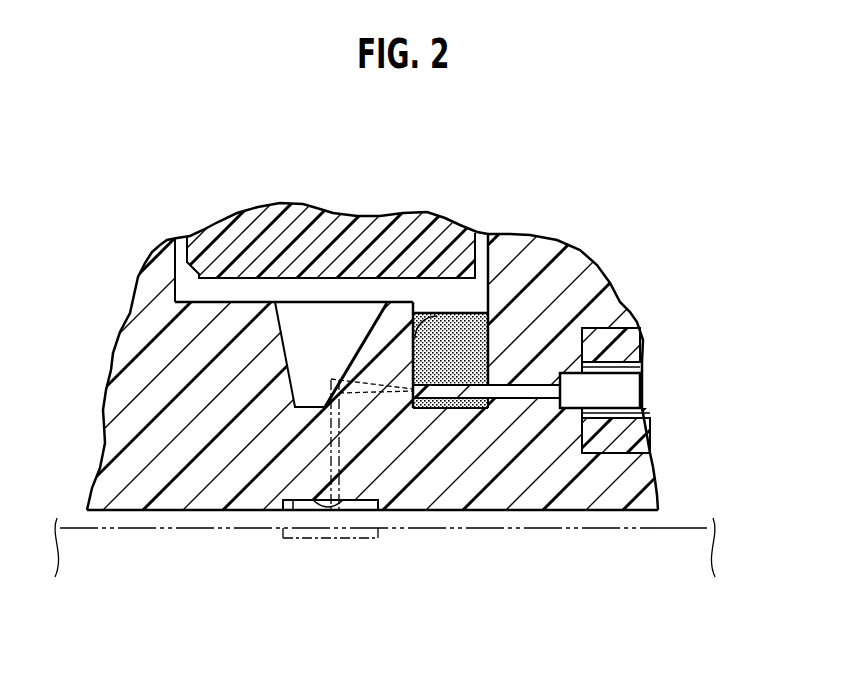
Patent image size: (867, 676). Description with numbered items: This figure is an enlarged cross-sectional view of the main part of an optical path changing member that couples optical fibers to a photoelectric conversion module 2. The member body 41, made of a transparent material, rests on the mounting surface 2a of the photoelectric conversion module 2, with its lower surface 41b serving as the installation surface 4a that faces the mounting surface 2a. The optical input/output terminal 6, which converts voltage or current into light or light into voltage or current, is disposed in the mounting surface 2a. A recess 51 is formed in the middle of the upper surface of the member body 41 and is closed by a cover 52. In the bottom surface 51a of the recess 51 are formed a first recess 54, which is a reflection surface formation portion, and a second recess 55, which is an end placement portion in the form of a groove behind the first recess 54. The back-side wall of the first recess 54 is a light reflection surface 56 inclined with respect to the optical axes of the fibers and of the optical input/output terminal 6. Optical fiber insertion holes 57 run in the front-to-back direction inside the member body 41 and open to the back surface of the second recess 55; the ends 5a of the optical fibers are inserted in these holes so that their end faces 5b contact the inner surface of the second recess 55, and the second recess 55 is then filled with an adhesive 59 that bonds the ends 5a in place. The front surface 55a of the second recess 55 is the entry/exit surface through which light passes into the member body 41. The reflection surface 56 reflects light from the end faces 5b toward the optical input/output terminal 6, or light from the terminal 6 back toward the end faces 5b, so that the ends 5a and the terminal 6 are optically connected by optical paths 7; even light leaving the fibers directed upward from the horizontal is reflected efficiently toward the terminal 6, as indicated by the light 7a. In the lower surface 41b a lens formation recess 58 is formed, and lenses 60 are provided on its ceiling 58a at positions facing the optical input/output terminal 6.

The member body 41 is at (544, 248).
The lower surface 41b is at (137, 560).
The installation surface 4a is at (493, 565).
The recess 51 is at (208, 292).
The bottom surface of the recess 51a is at (255, 300).
The cover 52 is at (369, 228).
The first recess 54 is at (301, 320).
The light reflection surface 56 is at (357, 353).
The second recess 55 is at (455, 318).
The front surface of the second recess 55a is at (436, 314).
The ends of optical fibers 5a is at (457, 547).
The end faces of optical fibers 5b is at (411, 547).
The optical fiber insertion hole 57 is at (535, 550).
The adhesive 59 is at (670, 311).
The optical path 7 is at (332, 453).
The upward-directed light reflected toward the terminal 7a is at (386, 380).
The lens formation recess 58 is at (265, 550).
The ceiling 58a is at (303, 585).
The lens 60 is at (338, 558).
The optical input/output terminal 6 is at (364, 592).
The photoelectric conversion module 2 is at (673, 528).
The mounting surface 2a is at (697, 528).